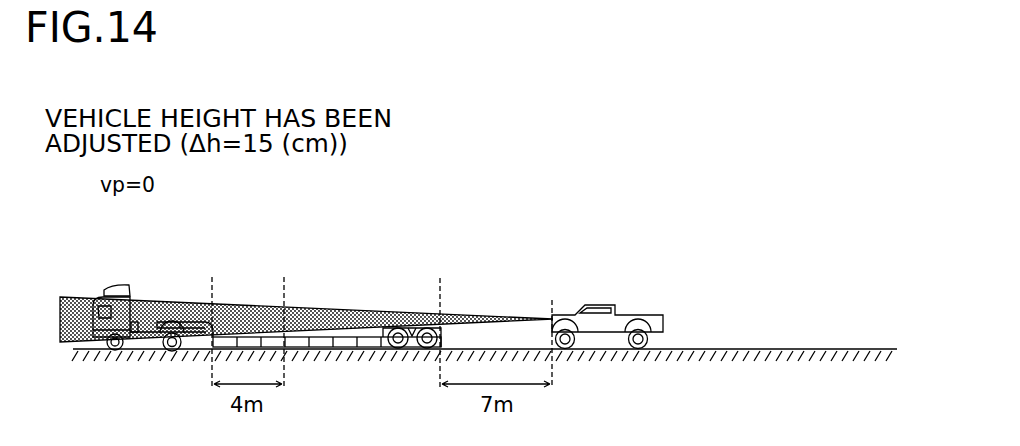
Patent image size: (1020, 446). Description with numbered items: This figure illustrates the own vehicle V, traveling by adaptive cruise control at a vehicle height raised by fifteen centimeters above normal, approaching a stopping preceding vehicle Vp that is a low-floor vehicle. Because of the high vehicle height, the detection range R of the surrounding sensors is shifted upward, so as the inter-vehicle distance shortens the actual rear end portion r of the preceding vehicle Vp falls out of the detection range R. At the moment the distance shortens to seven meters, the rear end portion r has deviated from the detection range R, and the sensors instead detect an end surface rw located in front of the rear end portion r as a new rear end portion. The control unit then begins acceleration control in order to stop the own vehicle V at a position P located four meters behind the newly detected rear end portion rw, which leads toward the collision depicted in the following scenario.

The preceding vehicle Vp is at (122, 287).
The end surface (rear end portion) rw is at (227, 305).
The detection range R is at (345, 305).
The rear end portion r is at (450, 305).
The own vehicle V is at (603, 303).
The position P is at (284, 347).